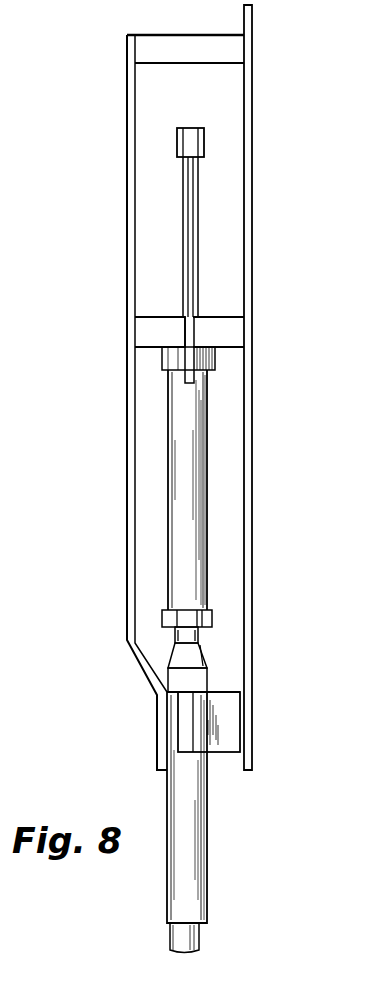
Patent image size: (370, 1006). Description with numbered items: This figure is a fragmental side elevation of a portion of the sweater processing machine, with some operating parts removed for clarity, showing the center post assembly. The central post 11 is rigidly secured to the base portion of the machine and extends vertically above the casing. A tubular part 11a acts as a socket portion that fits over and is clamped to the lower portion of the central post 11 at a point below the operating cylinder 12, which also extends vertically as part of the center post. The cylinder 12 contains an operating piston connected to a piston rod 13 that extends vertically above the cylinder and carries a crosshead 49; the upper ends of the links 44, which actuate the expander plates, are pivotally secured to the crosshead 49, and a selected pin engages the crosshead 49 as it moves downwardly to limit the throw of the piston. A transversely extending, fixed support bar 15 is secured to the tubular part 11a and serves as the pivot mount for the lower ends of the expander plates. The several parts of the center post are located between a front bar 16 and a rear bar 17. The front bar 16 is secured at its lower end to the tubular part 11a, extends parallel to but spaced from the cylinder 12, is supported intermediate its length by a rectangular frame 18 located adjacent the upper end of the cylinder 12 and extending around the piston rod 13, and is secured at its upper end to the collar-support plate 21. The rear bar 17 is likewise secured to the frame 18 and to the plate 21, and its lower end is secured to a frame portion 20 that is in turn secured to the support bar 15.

The collar-support plate 21 is at (147, 52).
The crosshead 49 is at (205, 140).
The piston rod 13 is at (197, 203).
The links 44 is at (193, 282).
The rectangular frame 18 is at (147, 337).
The rear bar 17 is at (248, 402).
The front bar 16 is at (130, 413).
The operating cylinder 12 is at (168, 497).
The support bar 15 is at (187, 725).
The frame portion 20 is at (225, 755).
The tubular part 11a is at (206, 835).
The central post 11 is at (199, 937).